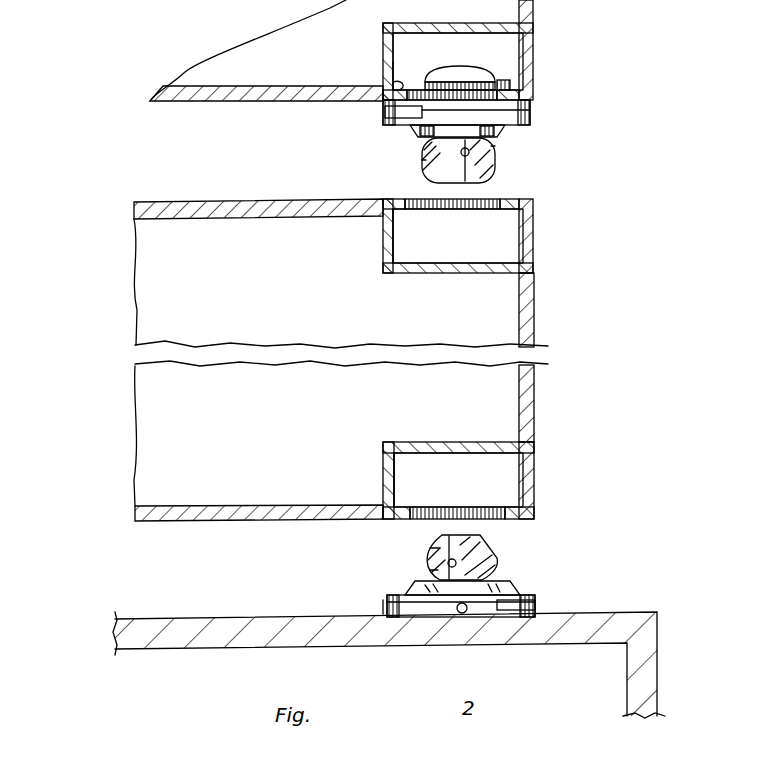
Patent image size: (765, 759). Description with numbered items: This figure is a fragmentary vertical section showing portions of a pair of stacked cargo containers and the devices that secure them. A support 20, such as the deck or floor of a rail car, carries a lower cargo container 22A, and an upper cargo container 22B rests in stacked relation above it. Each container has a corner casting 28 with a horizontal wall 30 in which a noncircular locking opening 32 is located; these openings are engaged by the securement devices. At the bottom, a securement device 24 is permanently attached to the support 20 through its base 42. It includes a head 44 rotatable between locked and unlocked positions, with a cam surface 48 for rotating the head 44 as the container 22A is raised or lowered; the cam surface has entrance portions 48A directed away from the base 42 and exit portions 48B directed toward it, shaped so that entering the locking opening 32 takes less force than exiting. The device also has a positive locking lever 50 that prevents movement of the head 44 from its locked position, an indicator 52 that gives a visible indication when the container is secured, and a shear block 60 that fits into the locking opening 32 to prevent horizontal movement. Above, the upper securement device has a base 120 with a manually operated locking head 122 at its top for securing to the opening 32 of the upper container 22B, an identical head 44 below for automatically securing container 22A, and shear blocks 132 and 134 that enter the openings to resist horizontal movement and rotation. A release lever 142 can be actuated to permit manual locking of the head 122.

The support 20 is at (157, 619).
The lower cargo container 22A is at (135, 370).
The upper cargo container 22B is at (203, 60).
The securement device 24 is at (385, 607).
The corner casting 28 is at (383, 38).
The horizontal wall 30 is at (383, 65).
The locking opening 32 is at (525, 103).
The base 42 is at (390, 597).
The head 44 is at (422, 161).
The cam surface 48 is at (497, 160).
The entrance portion 48A is at (487, 178).
The exit portion 48B is at (497, 146).
The positive locking lever 50 is at (537, 606).
The indicator 52 is at (464, 613).
The shear block 60 is at (520, 595).
The base 120 is at (530, 115).
The manually operated locking head 122 is at (485, 66).
The shear block 132 is at (505, 84).
The shear block 134 is at (410, 130).
The release lever 142 is at (385, 113).